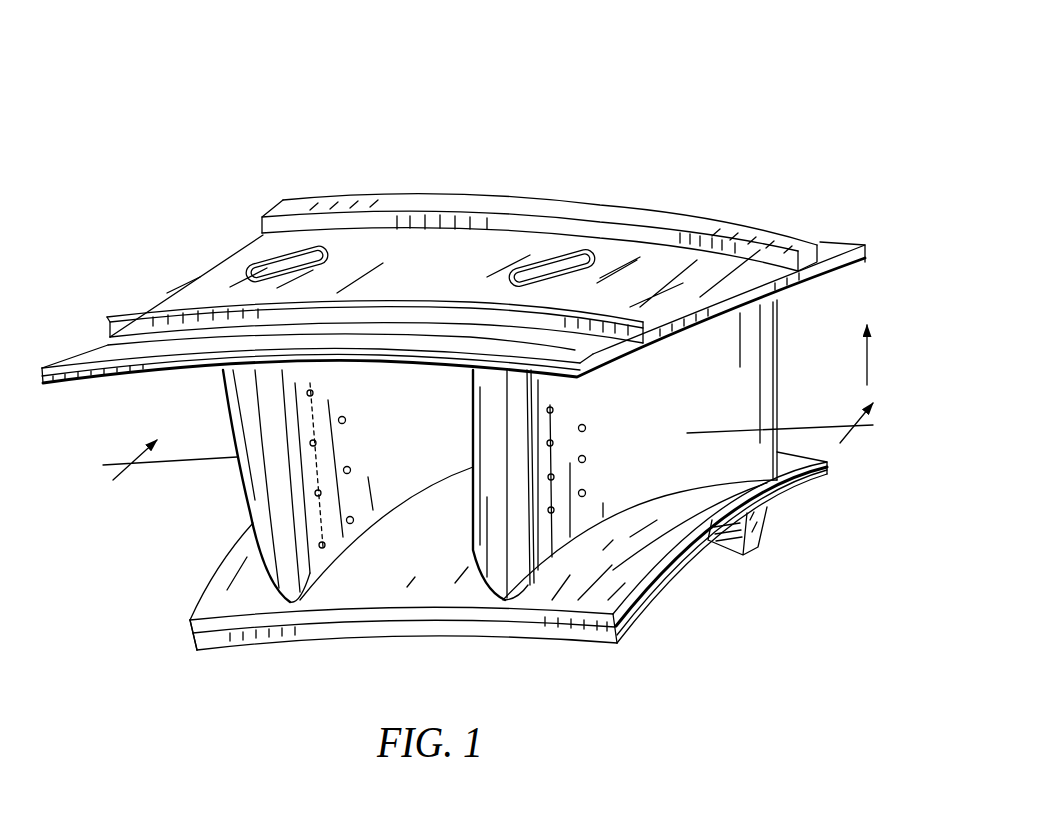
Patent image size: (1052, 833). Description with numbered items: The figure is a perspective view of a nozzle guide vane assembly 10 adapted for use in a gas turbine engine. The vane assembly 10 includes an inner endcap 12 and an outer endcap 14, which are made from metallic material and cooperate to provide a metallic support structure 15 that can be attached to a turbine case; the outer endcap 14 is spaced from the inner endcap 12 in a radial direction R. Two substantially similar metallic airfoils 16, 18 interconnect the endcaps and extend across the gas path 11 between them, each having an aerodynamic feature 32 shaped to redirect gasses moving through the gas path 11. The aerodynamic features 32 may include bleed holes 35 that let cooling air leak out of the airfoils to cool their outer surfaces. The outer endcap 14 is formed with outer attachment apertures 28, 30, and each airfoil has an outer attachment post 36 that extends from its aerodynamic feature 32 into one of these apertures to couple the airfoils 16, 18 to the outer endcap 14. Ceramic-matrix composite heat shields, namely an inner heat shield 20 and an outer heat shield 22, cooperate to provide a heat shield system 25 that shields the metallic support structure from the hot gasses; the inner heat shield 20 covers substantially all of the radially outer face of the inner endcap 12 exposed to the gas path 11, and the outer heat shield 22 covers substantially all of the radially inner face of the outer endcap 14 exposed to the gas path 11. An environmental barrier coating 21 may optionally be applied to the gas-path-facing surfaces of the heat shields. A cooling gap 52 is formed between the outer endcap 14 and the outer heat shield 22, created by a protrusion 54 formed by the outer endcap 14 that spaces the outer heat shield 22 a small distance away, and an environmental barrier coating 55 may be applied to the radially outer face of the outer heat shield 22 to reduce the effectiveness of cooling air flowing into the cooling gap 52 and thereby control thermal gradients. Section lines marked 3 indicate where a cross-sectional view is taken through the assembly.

The nozzle guide vane assembly 10 is at (759, 118).
The gas path 11 is at (219, 439).
The inner endcap 12 is at (755, 557).
The outer endcap 14 is at (700, 228).
The metallic support structure 15 is at (672, 200).
The airfoil 16 is at (256, 507).
The airfoil 18 is at (470, 512).
The inner heat shield 20 is at (222, 612).
The environmental barrier coating 21 is at (677, 355).
The outer heat shield 22 is at (163, 380).
The heat shield system 25 is at (287, 250).
The outer attachment aperture 28 is at (330, 256).
The outer attachment aperture 30 is at (590, 263).
The aerodynamic feature 32 is at (262, 543).
The bleed holes 35 is at (345, 415).
The outer attachment post 36 is at (311, 246).
The cooling gap 52 is at (747, 313).
The protrusion 54 is at (782, 292).
The environmental barrier coating 55 is at (693, 313).
The radial direction R is at (862, 366).
The section line 3- 3 is at (488, 455).